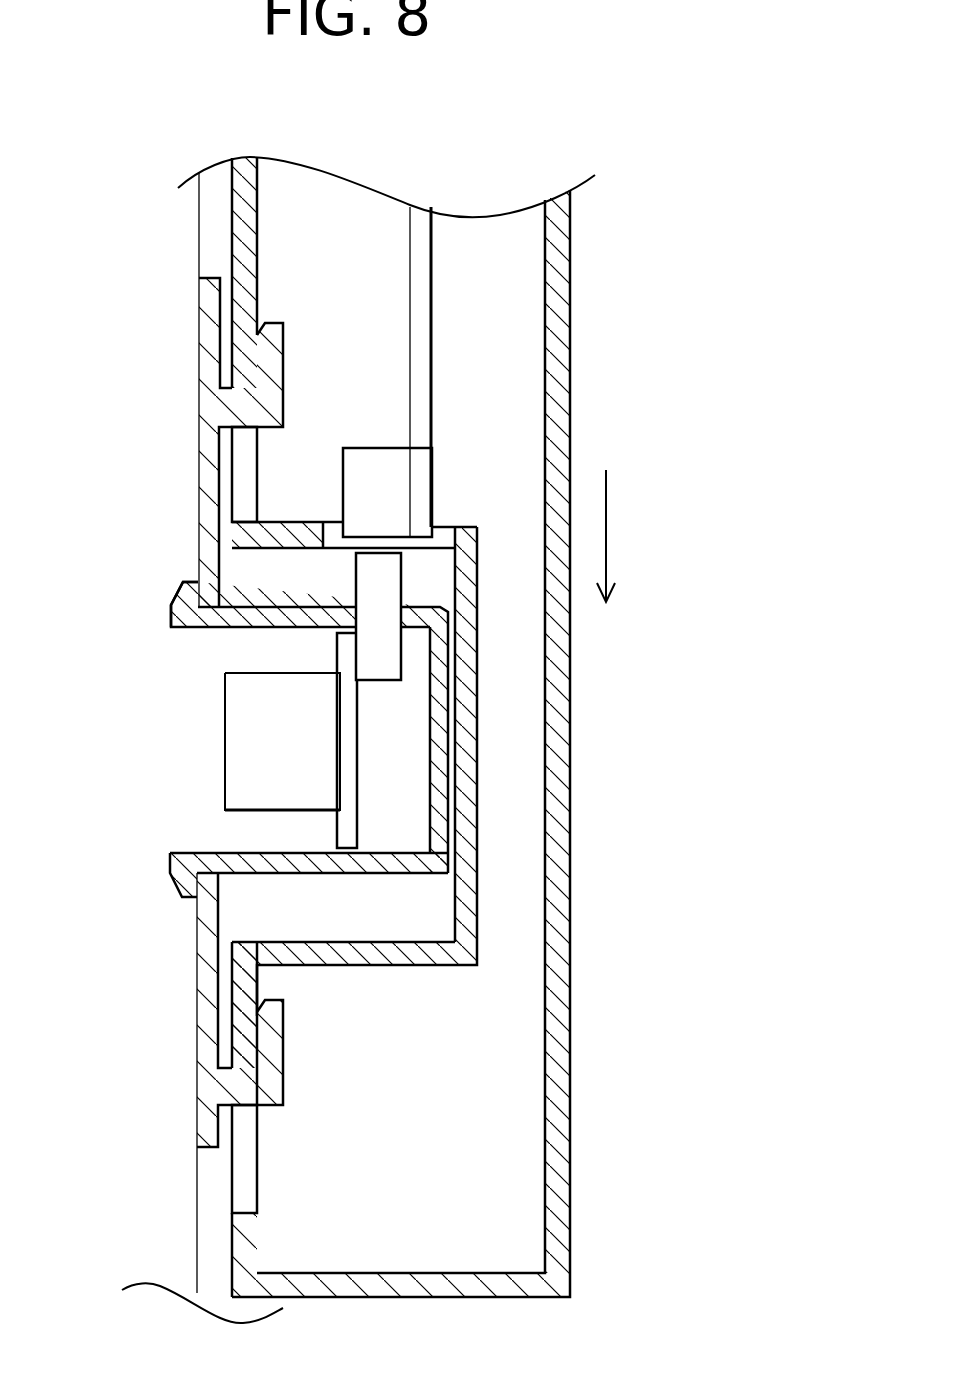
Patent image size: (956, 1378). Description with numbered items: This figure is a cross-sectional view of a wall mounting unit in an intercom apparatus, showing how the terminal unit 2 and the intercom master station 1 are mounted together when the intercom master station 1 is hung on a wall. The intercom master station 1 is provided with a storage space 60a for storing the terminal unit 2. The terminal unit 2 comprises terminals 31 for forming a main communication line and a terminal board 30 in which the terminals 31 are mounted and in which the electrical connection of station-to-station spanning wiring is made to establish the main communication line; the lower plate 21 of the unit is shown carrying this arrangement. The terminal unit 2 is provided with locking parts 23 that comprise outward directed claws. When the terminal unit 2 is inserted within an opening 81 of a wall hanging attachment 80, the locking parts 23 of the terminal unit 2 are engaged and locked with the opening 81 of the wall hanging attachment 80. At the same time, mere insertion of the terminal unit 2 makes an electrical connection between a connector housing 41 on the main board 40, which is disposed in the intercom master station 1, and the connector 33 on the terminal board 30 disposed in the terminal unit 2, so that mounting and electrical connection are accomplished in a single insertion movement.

The intercom master station 1 is at (607, 713).
The terminal unit 2 is at (140, 562).
The bottom plate 21 is at (238, 857).
The locking parts 23 is at (170, 617).
The terminal board 30 is at (345, 750).
The terminals 31 is at (242, 740).
The connector 33 is at (378, 662).
The main board 40 is at (425, 306).
The connector housing 41 is at (392, 495).
The storage space 60a is at (383, 915).
The wall hanging attachment 80 is at (208, 415).
The opening 81 is at (268, 700).